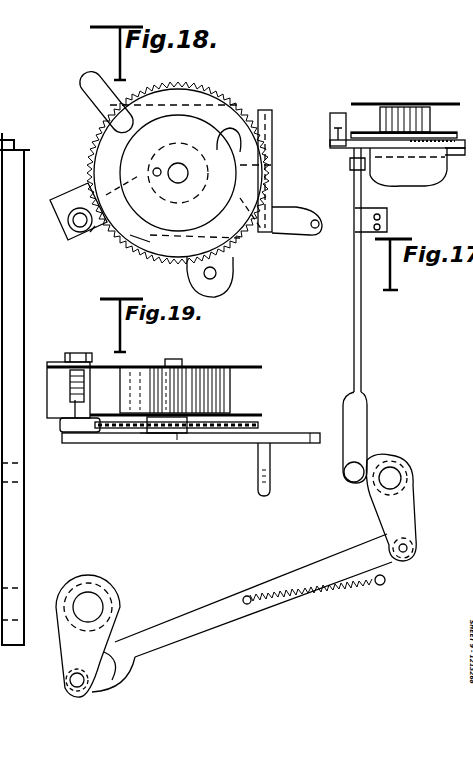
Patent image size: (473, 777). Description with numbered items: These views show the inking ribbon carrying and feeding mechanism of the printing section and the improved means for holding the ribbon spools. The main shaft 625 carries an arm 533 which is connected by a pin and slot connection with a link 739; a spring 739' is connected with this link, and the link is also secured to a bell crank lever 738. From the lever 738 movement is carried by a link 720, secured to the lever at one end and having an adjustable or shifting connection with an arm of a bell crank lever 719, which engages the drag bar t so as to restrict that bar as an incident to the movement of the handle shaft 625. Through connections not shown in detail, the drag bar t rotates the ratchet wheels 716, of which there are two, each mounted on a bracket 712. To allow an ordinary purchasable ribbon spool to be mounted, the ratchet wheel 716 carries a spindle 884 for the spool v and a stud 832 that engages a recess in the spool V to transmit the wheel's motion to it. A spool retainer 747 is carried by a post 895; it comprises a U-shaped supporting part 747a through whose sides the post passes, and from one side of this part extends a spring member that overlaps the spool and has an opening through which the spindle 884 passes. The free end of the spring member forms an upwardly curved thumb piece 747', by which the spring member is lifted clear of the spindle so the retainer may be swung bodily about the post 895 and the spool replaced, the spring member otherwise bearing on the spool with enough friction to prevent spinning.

In FIG. 18, the stud 832 is at (93, 149).
In FIG. 19, the stud 832 is at (157, 444).
In FIG. 18, the spindle 884 is at (181, 165).
In FIG. 19, the spindle 884 is at (182, 362).
In FIG. 18, the spool retainer 747 is at (194, 251).
In FIG. 19, the spool retainer 747 is at (123, 384).
In FIG. 18, the U-shaped supporting part 747a is at (93, 153).
In FIG. 19, the U-shaped supporting part 747a is at (47, 378).
In FIG. 18, the thumb piece 747' is at (276, 162).
In FIG. 19, the thumb piece 747' is at (181, 376).
In FIG. 18, the post 895 is at (90, 232).
In FIG. 19, the post 895 is at (76, 402).
In FIG. 18, the ratchet wheel 716 is at (145, 238).
In FIG. 19, the ratchet wheel 716 is at (260, 425).
In FIG. 19, the bracket 712 is at (272, 455).
In FIG. 17, the bell crank lever 719 is at (353, 186).
In FIG. 17, the link 720 is at (362, 318).
In FIG. 17, the bell crank lever 738 is at (396, 507).
In FIG. 17, the link 739 is at (242, 613).
In FIG. 17, the spring 739' is at (316, 607).
In FIG. 17, the main shaft 625 is at (96, 603).
In FIG. 17, the arm 533 is at (60, 655).
In FIG. 18, the spool v is at (120, 122).
In FIG. 17, the spool v is at (443, 100).
In FIG. 19, the spool V is at (230, 368).
In FIG. 17, the drag bar t is at (330, 118).